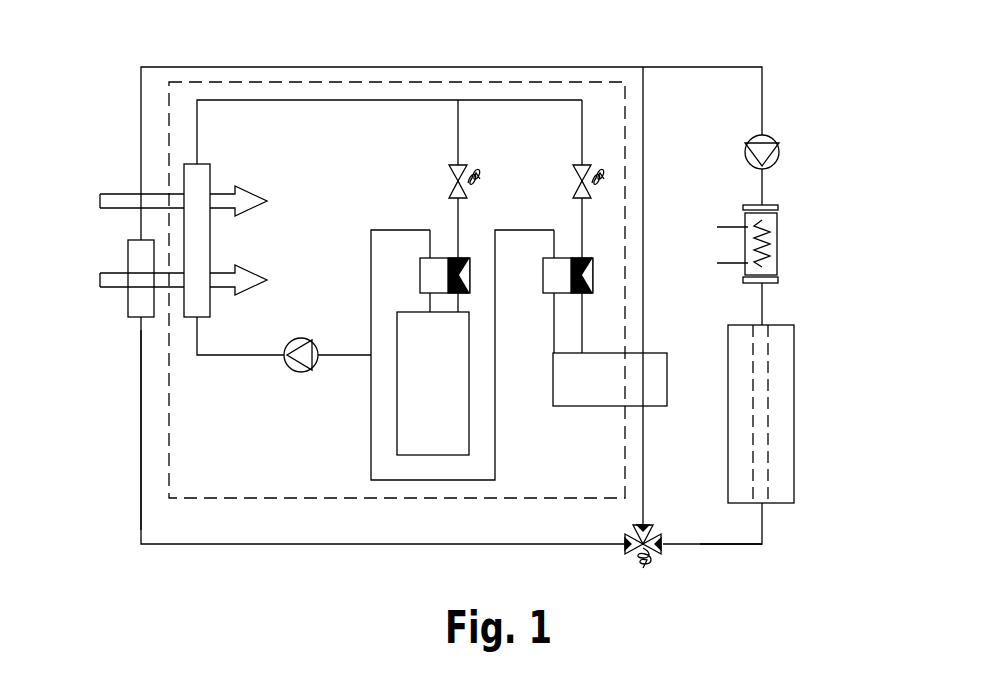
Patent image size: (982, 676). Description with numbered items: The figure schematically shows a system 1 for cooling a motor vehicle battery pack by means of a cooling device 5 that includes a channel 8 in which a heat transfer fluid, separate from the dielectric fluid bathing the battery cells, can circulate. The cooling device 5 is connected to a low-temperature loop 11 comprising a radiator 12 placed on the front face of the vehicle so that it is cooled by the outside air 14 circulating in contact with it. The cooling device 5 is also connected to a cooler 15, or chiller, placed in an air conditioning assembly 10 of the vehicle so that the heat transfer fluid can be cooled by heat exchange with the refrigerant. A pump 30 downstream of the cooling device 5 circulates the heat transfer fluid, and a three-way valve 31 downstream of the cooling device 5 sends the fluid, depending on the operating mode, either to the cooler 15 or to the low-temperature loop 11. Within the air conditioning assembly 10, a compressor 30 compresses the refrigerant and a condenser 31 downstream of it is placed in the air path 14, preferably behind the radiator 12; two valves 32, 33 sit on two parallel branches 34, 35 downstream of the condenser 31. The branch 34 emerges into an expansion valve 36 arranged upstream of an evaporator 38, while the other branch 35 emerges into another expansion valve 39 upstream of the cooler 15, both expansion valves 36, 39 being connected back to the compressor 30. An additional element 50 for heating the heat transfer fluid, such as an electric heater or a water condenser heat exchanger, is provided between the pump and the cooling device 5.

The system 1 is at (763, 582).
The cooling device 5 is at (795, 371).
The channel 8 is at (770, 387).
The air conditioning assembly 10 is at (565, 62).
The low-temperature loop 11 is at (124, 421).
The radiator 12 is at (125, 301).
The outside air 14 is at (247, 282).
The cooler 15 is at (668, 380).
The pump 30 is at (289, 370).
The three-way valve 31 is at (212, 244).
The valve 32 is at (449, 172).
The valve 33 is at (573, 181).
The branch 34 is at (458, 137).
The branch 35 is at (582, 138).
The expansion valve 36 is at (445, 258).
The evaporator 38 is at (470, 433).
The expansion valve 39 is at (545, 277).
The additional element for heating the heat transfer fluid 50 is at (778, 240).